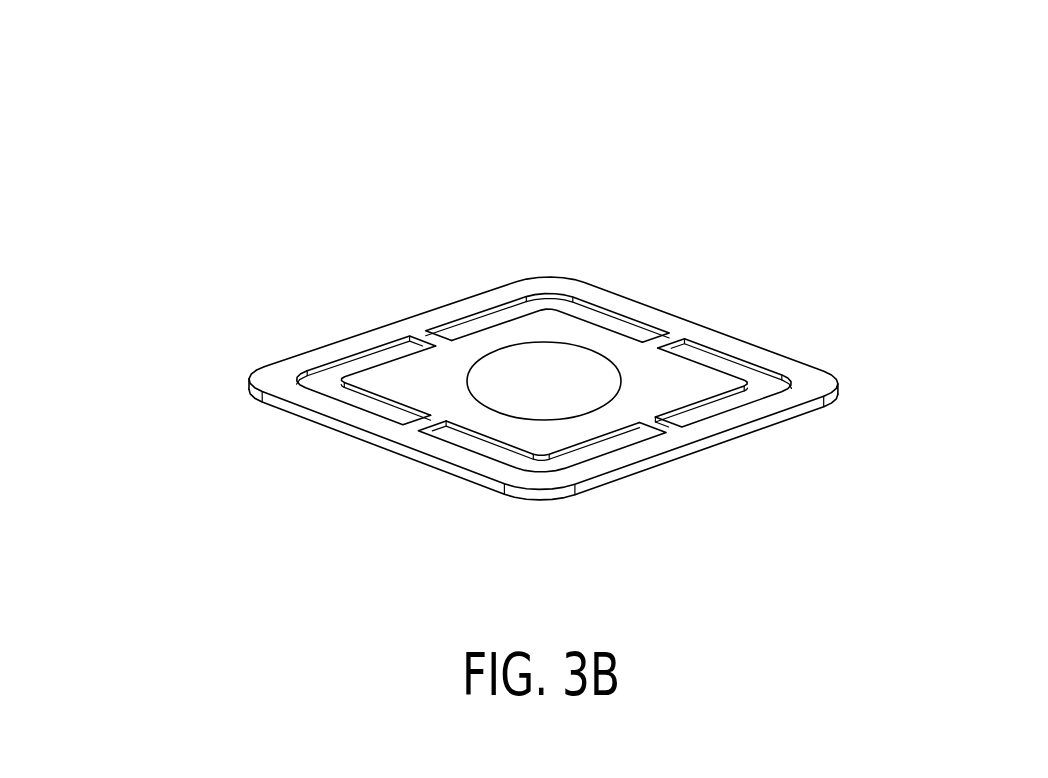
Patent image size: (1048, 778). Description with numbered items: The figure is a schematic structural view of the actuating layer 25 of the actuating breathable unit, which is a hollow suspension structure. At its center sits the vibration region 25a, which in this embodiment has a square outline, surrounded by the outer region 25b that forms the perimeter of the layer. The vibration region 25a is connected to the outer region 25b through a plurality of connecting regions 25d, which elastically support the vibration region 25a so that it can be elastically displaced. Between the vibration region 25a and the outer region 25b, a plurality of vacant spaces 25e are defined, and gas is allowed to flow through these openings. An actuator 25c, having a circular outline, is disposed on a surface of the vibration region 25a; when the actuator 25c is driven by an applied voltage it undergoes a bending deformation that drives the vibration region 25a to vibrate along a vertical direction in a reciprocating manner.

The actuating layer 25 is at (1019, 103).
The vibration region 25a is at (630, 363).
The outer region 25b is at (342, 352).
The actuator 25c is at (532, 367).
The connecting regions 25d is at (422, 335).
The vacant spaces 25e is at (320, 390).